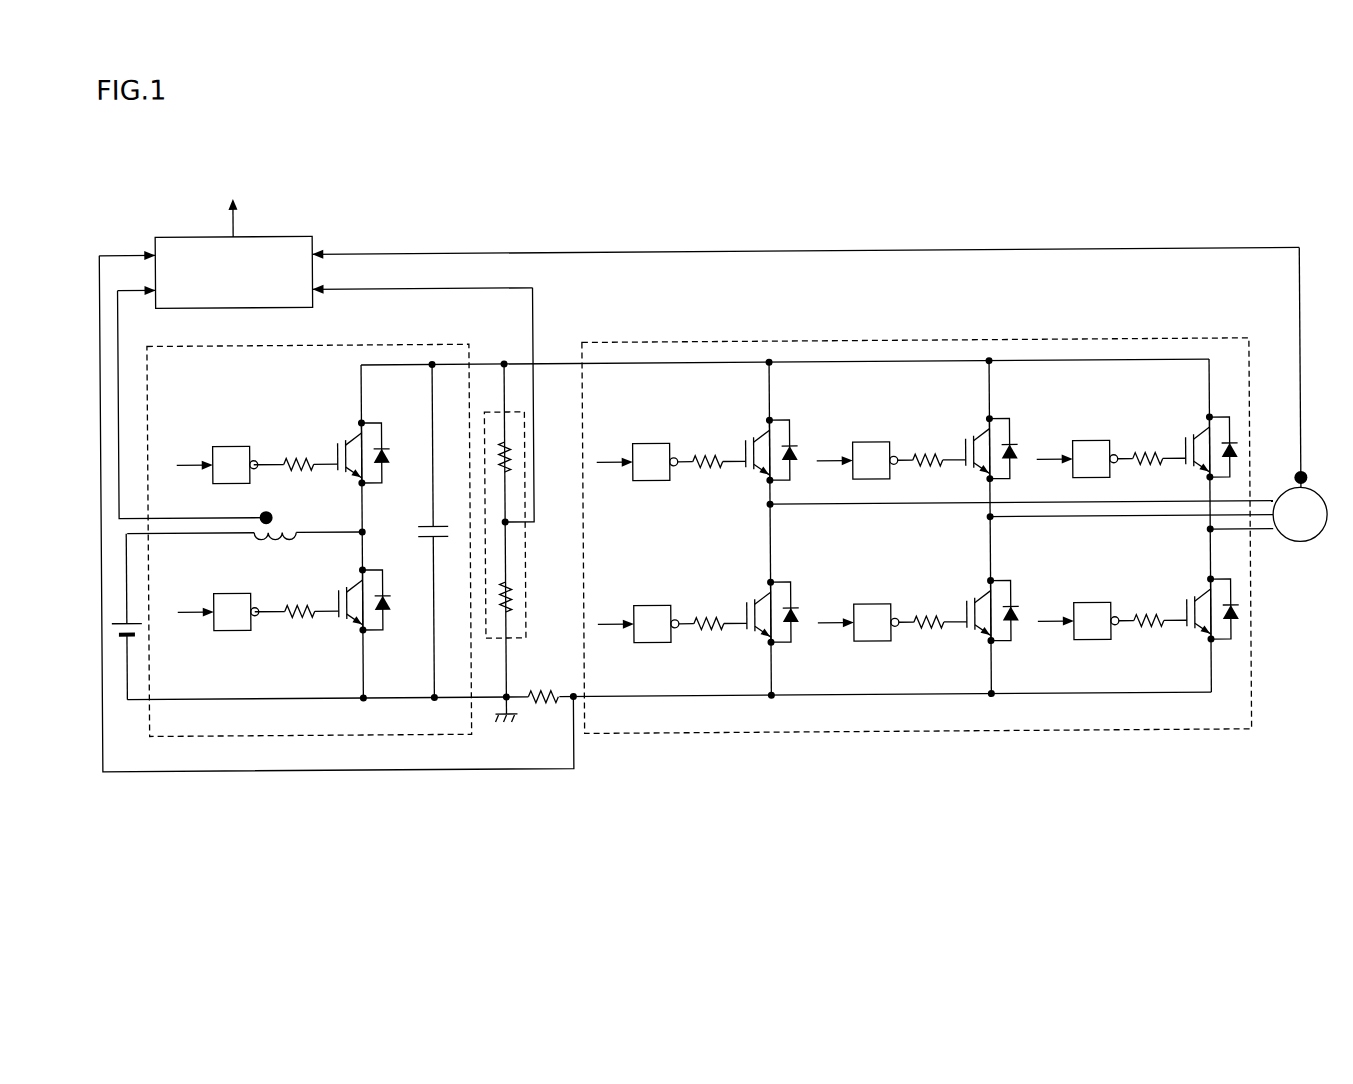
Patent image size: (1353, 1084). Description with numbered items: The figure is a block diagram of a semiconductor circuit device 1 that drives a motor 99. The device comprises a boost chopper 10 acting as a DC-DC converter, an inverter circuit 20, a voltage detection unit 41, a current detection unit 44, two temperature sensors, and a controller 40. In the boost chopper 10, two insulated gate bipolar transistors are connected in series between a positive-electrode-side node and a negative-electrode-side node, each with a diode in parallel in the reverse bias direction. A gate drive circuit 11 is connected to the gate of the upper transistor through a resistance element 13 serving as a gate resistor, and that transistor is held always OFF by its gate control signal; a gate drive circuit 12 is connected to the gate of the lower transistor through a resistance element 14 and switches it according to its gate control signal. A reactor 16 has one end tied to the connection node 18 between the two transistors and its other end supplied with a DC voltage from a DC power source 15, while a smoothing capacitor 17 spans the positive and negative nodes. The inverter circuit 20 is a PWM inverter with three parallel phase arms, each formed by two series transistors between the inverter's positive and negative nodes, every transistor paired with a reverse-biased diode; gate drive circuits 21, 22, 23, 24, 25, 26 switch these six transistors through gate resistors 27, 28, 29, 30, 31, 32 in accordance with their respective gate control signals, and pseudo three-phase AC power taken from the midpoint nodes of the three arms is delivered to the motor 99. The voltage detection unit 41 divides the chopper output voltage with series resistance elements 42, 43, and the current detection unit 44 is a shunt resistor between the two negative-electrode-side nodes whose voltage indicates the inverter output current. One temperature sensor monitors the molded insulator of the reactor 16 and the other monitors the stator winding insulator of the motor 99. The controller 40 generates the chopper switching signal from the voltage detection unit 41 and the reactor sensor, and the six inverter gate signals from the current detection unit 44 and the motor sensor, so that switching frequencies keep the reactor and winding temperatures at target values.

The semiconductor circuit device 1 is at (1161, 173).
The boost chopper 10 is at (420, 343).
The gate drive circuit 11 is at (226, 444).
The gate drive circuit 12 is at (230, 630).
The resistance element 13 is at (300, 453).
The resistance element 14 is at (295, 620).
The DC power source 15 is at (143, 630).
The reactor 16 is at (282, 540).
The capacitor 17 is at (440, 523).
The connection node 18 is at (368, 530).
The inverter circuit 20 is at (693, 342).
The gate drive circuit 21 is at (648, 442).
The gate drive circuit 22 is at (648, 605).
The gate drive circuit 23 is at (868, 442).
The gate drive circuit 24 is at (868, 605).
The gate drive circuit 25 is at (1088, 442).
The gate drive circuit 26 is at (1088, 605).
The resistance element 27 is at (700, 453).
The resistance element 28 is at (701, 616).
The resistance element 29 is at (920, 453).
The resistance element 30 is at (921, 616).
The resistance element 31 is at (1140, 453).
The resistance element 32 is at (1141, 616).
The controller 40 is at (285, 234).
The voltage detection unit 41 is at (526, 621).
The resistance element 42 is at (510, 456).
The resistance element 43 is at (510, 595).
The current detection unit 44 is at (535, 688).
The motor 99 is at (1300, 546).